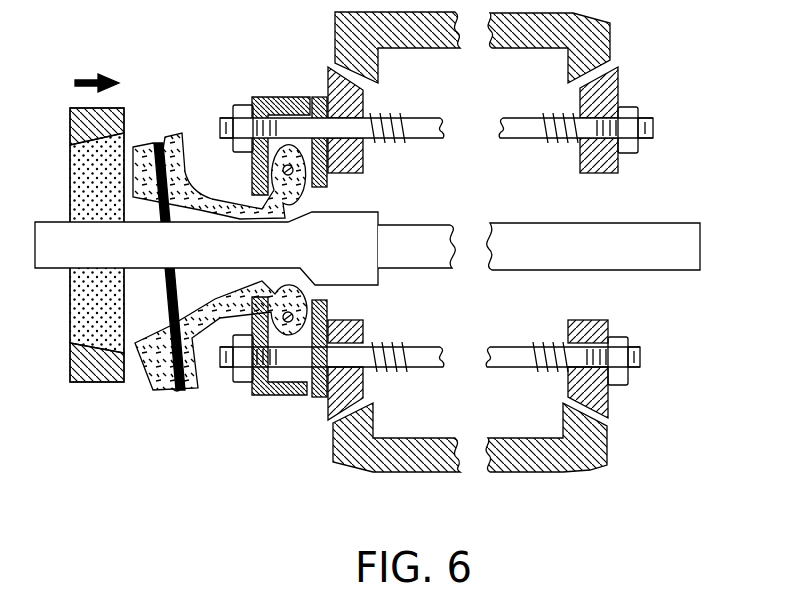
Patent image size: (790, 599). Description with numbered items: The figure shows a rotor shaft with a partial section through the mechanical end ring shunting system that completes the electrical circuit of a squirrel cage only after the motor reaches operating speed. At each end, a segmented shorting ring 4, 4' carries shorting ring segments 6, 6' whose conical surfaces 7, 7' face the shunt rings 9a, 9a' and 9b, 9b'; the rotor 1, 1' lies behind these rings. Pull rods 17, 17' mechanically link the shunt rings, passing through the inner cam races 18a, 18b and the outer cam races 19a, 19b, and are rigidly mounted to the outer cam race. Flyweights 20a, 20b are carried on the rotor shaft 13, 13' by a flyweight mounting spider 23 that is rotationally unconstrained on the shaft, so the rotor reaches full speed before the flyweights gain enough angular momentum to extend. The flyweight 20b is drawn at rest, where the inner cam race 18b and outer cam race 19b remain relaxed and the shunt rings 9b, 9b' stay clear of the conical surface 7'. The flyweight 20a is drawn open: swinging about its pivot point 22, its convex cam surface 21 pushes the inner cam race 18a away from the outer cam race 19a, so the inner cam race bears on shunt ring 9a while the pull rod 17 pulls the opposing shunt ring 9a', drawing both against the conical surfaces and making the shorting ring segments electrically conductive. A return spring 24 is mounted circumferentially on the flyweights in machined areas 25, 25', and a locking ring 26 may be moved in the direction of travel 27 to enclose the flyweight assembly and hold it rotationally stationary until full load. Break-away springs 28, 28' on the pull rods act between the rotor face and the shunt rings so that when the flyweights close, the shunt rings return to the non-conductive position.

The rotor 1 is at (419, 44).
The rotor 1' is at (523, 472).
The segmented shorting ring 4 is at (380, 45).
The segmented shorting ring 4' is at (465, 444).
The shorting ring segment 6 is at (562, 47).
The shorting ring segment 6' is at (347, 455).
The conical surface 7 is at (368, 85).
The conical surface 7' is at (572, 86).
The shunt ring 9a is at (326, 381).
The opposing shunt ring 9a' is at (611, 370).
The shunt ring 9b is at (328, 113).
The opposing shunt ring 9b' is at (623, 134).
The rotor shaft 13 is at (423, 231).
The rotor shaft 13' is at (593, 263).
The pull rod 17 is at (432, 145).
The pull rod 17' is at (509, 377).
The inner cam race 18a is at (328, 307).
The inner cam race 18b is at (328, 182).
The outer cam race 19a is at (265, 397).
The outer cam race 19b is at (258, 97).
The flyweight 20a is at (150, 392).
The flyweight 20b is at (195, 122).
The convex cam surface 21 is at (262, 203).
The pivot point 22 is at (300, 300).
The flyweight mounting spider 23 is at (380, 249).
The return spring 24 is at (176, 250).
The machined area 25 is at (159, 253).
The machined area 25' is at (192, 404).
The locking ring 26 is at (90, 385).
The direction of travel 27 is at (92, 80).
The break-away spring 28 is at (337, 121).
The break-away spring 28' is at (436, 256).